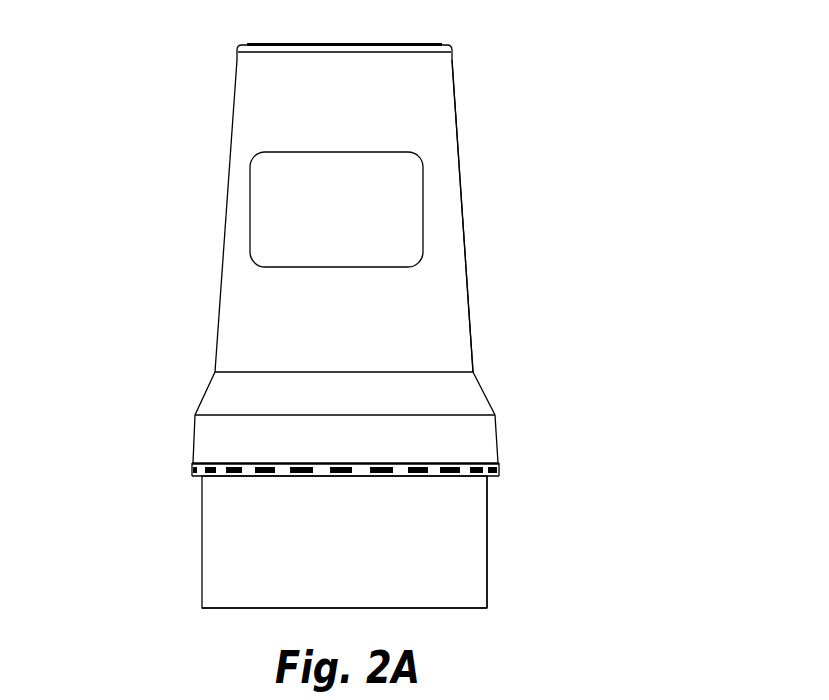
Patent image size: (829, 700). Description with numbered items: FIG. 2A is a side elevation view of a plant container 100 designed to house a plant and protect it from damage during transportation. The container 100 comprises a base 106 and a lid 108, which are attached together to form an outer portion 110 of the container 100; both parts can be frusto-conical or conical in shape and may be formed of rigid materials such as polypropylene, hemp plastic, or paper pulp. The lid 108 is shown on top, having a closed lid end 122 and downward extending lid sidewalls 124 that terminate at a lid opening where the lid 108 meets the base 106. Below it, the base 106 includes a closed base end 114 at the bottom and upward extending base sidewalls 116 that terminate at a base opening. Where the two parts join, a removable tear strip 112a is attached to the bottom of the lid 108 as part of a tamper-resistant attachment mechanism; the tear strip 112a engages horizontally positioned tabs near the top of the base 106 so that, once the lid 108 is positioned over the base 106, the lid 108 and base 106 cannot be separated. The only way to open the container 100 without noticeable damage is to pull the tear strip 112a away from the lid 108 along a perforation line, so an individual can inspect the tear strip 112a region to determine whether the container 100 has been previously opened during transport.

The container 100 is at (597, 91).
The base 106 is at (202, 541).
The lid 108 is at (225, 212).
The outer portion 110 is at (471, 320).
The tear strip 112a is at (192, 470).
The closed base end 114 is at (418, 608).
The base sidewalls 116 is at (488, 536).
The closed lid end 122 is at (413, 44).
The lid sidewalls 124 is at (462, 200).